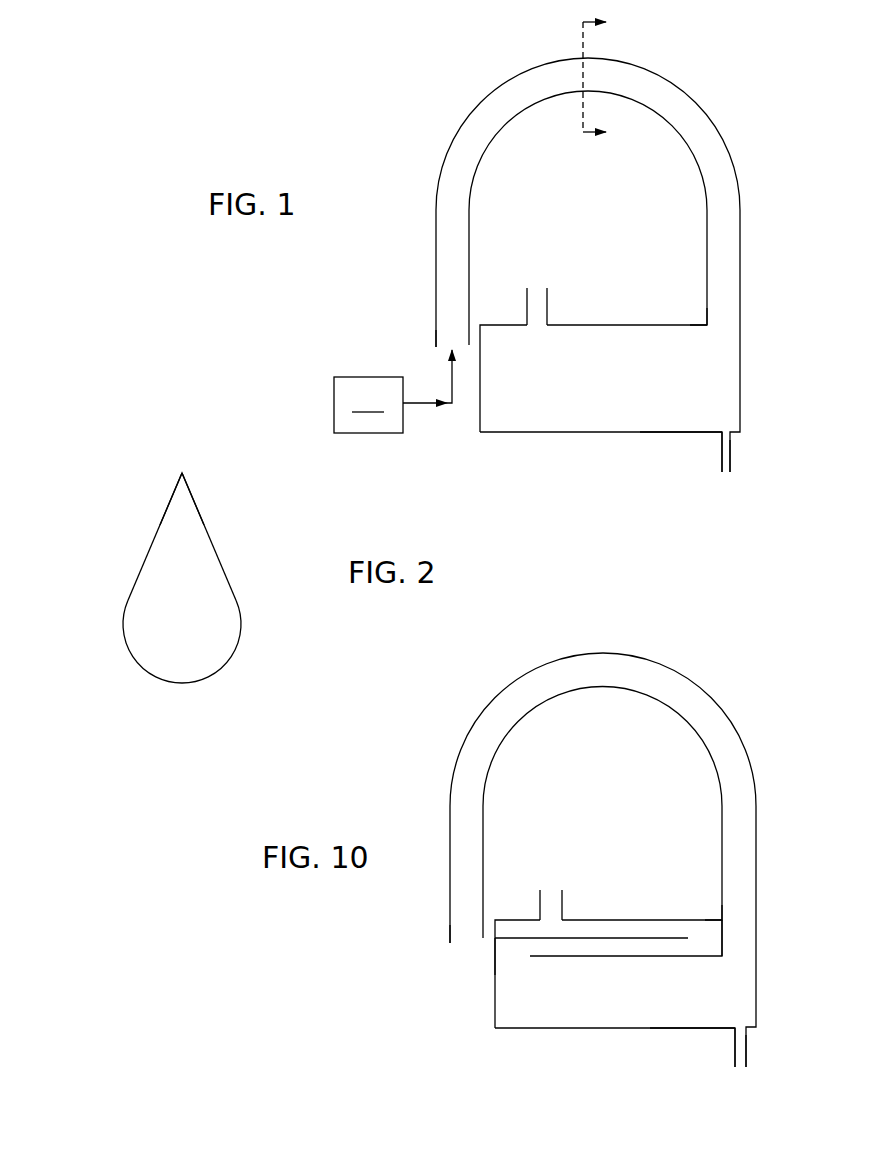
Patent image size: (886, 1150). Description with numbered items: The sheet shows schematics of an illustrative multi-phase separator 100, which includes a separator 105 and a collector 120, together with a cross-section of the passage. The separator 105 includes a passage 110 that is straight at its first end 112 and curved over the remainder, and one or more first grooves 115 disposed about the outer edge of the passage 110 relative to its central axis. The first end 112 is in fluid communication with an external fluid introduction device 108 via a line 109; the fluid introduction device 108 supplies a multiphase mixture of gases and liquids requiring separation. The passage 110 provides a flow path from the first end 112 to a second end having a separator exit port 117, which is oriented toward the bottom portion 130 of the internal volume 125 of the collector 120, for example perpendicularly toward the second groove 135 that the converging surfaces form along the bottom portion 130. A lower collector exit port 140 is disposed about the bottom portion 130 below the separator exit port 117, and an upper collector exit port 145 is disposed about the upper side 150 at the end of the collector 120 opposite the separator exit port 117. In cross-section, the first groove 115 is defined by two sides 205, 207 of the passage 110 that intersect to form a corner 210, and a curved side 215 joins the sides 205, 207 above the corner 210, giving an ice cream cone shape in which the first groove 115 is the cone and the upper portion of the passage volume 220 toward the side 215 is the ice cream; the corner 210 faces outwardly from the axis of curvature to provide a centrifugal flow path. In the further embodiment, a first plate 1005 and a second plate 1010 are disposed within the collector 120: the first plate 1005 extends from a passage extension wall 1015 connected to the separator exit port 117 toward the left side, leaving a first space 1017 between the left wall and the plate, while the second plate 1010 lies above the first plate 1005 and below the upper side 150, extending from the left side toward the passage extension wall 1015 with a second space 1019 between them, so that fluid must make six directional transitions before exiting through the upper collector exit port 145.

In FIG. 1, the multi-phase separator 100 is at (444, 84).
In FIG. 1, the separator 105 is at (508, 82).
In FIG. 10, the separator 105 is at (523, 677).
In FIG. 1, the fluid introduction device 108 is at (368, 405).
In FIG. 1, the line 109 is at (422, 405).
In FIG. 1, the passage 110 is at (450, 246).
In FIG. 10, the passage 110 is at (467, 854).
In FIG. 1, the first end 112 is at (436, 347).
In FIG. 10, the first end 112 is at (450, 943).
In FIG. 1, the first groove 115 is at (449, 151).
In FIG. 2, the first groove 115 is at (189, 525).
In FIG. 10, the first groove 115 is at (465, 746).
In FIG. 1, the separator exit port 117 is at (703, 323).
In FIG. 10, the separator exit port 117 is at (718, 919).
In FIG. 1, the collector 120 is at (740, 373).
In FIG. 10, the collector 120 is at (754, 995).
In FIG. 1, the internal volume 125 is at (564, 385).
In FIG. 10, the internal volume 125 is at (579, 979).
In FIG. 1, the bottom portion 130 is at (660, 432).
In FIG. 10, the bottom portion 130 is at (673, 1028).
In FIG. 1, the second groove 135 is at (577, 432).
In FIG. 10, the second groove 135 is at (593, 1028).
In FIG. 1, the lower collector exit port 140 is at (732, 460).
In FIG. 10, the lower collector exit port 140 is at (747, 1052).
In FIG. 1, the upper collector exit port 145 is at (525, 308).
In FIG. 10, the upper collector exit port 145 is at (540, 905).
In FIG. 1, the upper side 150 is at (610, 325).
In FIG. 10, the upper side 150 is at (643, 920).
In FIG. 2, the side 205 is at (152, 547).
In FIG. 2, the side 207 is at (212, 545).
In FIG. 2, the corner 210 is at (182, 473).
In FIG. 2, the side 215 is at (175, 683).
In FIG. 2, the upper portion of the passage volume 220 is at (199, 609).
In FIG. 10, the first plate 1005 is at (645, 956).
In FIG. 10, the second plate 1010 is at (590, 938).
In FIG. 10, the passage extension wall 1015 is at (722, 928).
In FIG. 10, the first space 1017 is at (512, 964).
In FIG. 10, the second space 1019 is at (714, 942).